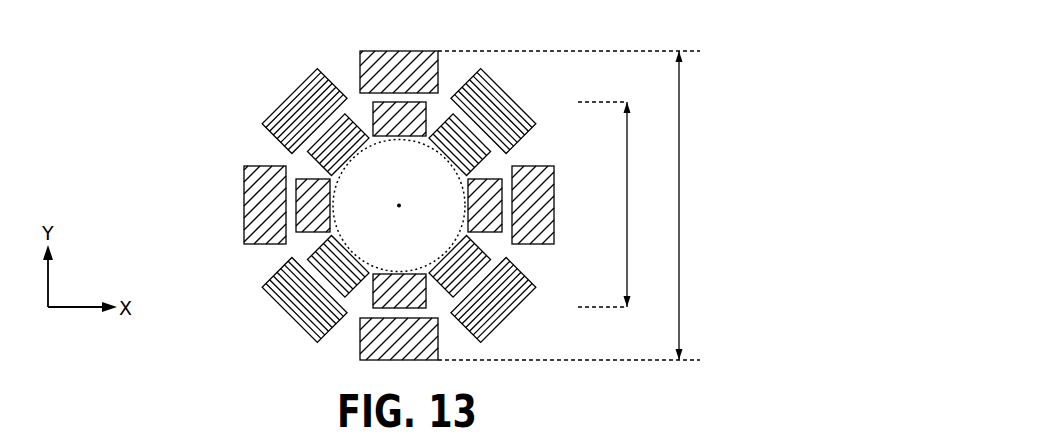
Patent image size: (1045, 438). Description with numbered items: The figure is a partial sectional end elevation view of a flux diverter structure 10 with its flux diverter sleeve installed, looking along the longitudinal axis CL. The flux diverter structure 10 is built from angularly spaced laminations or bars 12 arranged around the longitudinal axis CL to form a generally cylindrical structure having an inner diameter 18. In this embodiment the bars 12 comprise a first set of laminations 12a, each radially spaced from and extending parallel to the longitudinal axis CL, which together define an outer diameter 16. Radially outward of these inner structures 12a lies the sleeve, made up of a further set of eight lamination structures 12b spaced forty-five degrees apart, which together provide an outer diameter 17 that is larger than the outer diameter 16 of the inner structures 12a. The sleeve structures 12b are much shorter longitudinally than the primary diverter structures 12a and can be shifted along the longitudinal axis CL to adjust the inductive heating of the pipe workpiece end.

The flux diverter structure 10 is at (243, 44).
The bar 12 is at (360, 356).
The first set of laminations 12a is at (385, 130).
The further set of laminations 12b is at (360, 52).
The outer diameter 16 is at (627, 205).
The outer diameter 17 is at (679, 205).
The inner diameter 18 is at (336, 223).
The longitudinal axis CL is at (396, 197).